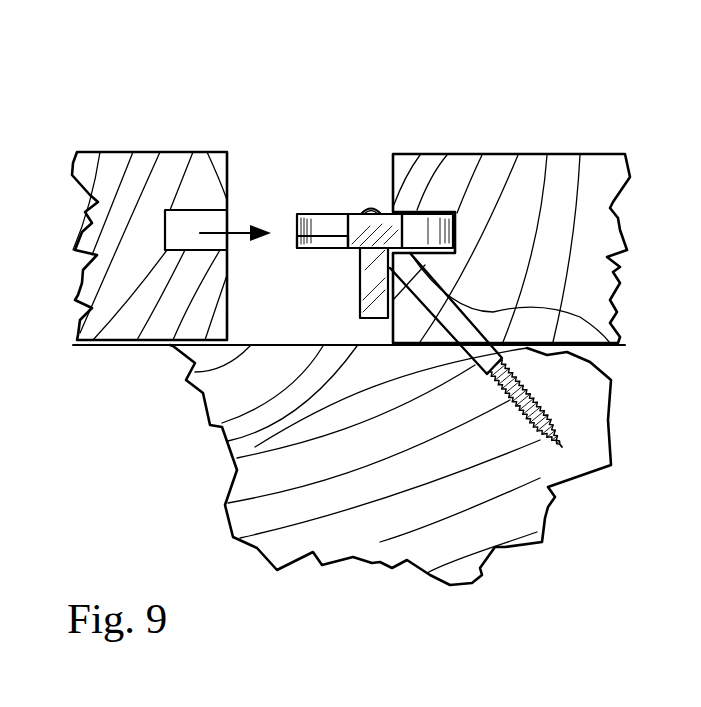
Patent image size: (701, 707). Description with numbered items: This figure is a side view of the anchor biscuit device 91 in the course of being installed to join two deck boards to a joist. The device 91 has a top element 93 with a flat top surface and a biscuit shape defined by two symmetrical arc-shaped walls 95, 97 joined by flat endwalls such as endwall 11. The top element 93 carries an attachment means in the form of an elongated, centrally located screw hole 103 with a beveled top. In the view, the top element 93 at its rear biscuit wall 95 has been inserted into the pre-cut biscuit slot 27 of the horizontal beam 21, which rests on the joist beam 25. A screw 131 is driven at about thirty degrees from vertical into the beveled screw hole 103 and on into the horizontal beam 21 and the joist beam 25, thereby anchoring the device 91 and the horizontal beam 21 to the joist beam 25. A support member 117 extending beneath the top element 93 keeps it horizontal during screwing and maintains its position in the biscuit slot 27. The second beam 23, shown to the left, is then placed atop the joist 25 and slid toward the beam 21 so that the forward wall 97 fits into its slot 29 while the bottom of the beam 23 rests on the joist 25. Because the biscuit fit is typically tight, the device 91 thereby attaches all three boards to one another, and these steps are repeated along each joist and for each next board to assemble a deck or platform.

The flat endwall 11 is at (415, 205).
The horizontal beam 21 is at (538, 155).
The beam 23 is at (95, 163).
The joist beam 25 is at (538, 503).
The pre-cut biscuit slot 27 is at (610, 343).
The slot 29 is at (200, 212).
The anchor biscuit device 91 is at (402, 230).
The top element 93 is at (318, 213).
The rear biscuit wall 95 is at (435, 212).
The wall 97 is at (320, 242).
The screw hole 103 is at (358, 210).
The support member 117 is at (367, 282).
The screw 131 is at (372, 212).